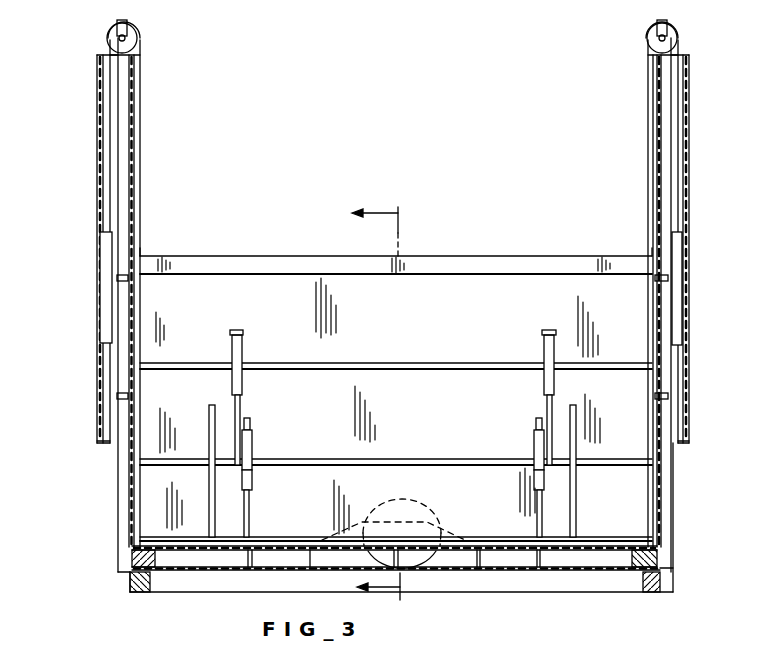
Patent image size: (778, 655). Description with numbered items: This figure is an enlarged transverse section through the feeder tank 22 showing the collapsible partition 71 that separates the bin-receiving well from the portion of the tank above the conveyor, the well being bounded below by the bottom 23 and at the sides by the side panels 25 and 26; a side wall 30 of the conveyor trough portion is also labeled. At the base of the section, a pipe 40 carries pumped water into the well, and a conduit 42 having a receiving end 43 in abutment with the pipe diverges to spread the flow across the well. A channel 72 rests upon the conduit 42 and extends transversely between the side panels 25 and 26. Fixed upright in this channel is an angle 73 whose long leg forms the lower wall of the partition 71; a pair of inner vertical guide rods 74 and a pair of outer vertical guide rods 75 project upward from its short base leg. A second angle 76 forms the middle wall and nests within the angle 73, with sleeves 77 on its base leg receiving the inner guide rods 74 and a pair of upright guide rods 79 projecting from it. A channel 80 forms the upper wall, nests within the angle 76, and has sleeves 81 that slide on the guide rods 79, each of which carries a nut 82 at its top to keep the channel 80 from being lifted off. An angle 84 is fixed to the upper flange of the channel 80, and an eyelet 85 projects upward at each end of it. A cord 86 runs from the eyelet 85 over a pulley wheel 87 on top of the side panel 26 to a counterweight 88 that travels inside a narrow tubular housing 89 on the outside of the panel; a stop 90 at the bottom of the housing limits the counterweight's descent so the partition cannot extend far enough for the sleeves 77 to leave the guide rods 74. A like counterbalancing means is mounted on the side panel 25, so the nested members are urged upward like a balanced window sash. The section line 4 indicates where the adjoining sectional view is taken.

The pulley wheel 87 is at (112, 40).
The cord 86 is at (108, 107).
The side panel 26 is at (135, 163).
The side panel 25 is at (660, 113).
The eyelet 85 is at (142, 254).
The angle 84 is at (233, 264).
The collapsible partition 71 is at (458, 248).
The section line 4- 4 is at (386, 403).
The channel 80 is at (421, 332).
The second angle 76 is at (421, 417).
The angle 73 is at (386, 491).
The nut 82 is at (232, 333).
The sleeves 81 is at (232, 350).
The upright guide rods 79 is at (240, 410).
The sleeves 77 is at (250, 445).
The outer vertical guide rods 75 is at (210, 497).
The inner vertical guide rods 74 is at (246, 508).
The channel 72 is at (258, 545).
The pipe 40 is at (402, 502).
The receiving end 43 is at (445, 530).
The conduit 42 is at (490, 553).
The bottom 23 is at (222, 573).
The counterweight 88 is at (103, 290).
The tubular housing 89 is at (100, 333).
The stop 90 is at (103, 446).
The side wall 30 is at (679, 643).
The tank 22 is at (745, 643).